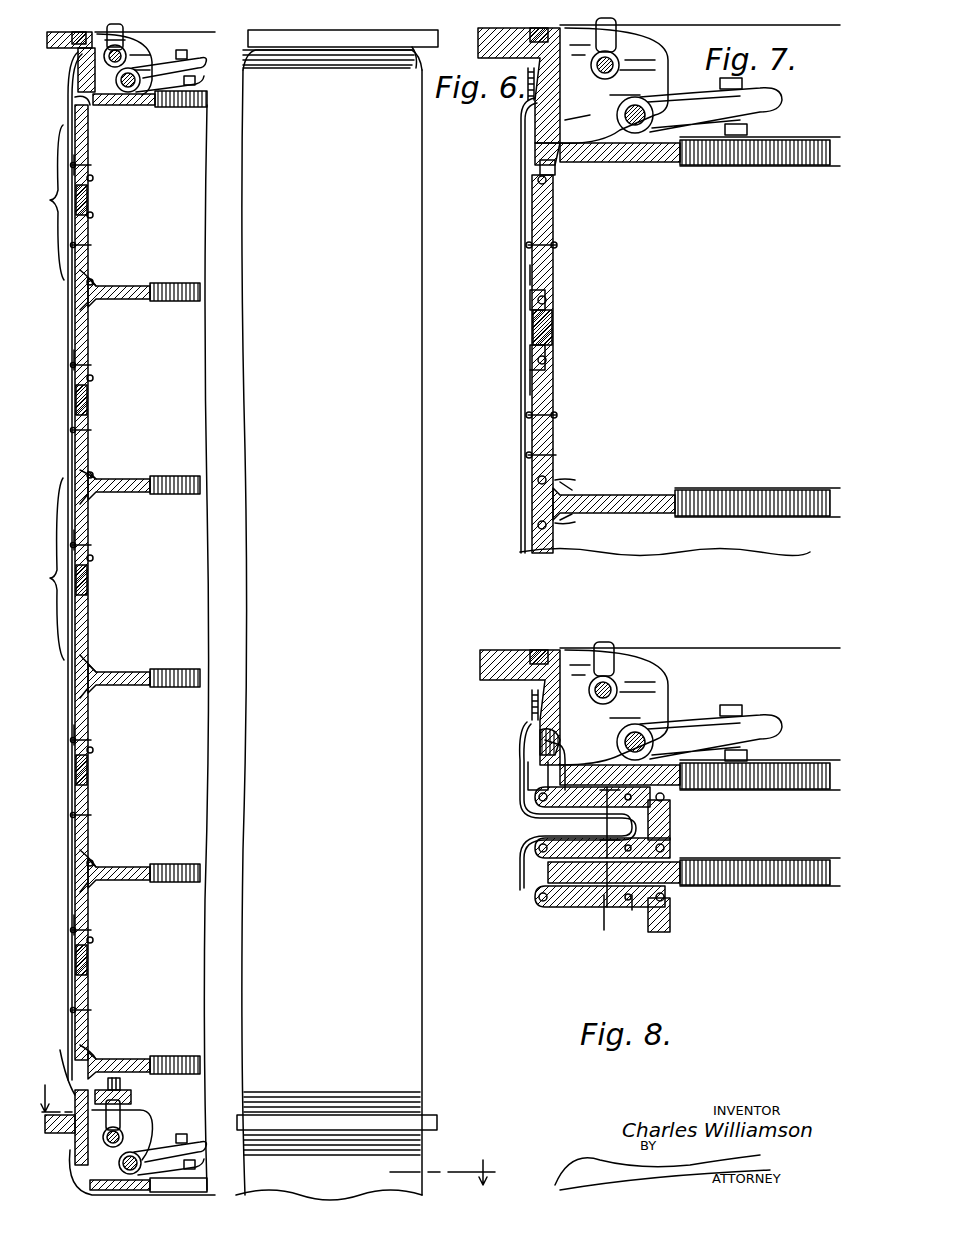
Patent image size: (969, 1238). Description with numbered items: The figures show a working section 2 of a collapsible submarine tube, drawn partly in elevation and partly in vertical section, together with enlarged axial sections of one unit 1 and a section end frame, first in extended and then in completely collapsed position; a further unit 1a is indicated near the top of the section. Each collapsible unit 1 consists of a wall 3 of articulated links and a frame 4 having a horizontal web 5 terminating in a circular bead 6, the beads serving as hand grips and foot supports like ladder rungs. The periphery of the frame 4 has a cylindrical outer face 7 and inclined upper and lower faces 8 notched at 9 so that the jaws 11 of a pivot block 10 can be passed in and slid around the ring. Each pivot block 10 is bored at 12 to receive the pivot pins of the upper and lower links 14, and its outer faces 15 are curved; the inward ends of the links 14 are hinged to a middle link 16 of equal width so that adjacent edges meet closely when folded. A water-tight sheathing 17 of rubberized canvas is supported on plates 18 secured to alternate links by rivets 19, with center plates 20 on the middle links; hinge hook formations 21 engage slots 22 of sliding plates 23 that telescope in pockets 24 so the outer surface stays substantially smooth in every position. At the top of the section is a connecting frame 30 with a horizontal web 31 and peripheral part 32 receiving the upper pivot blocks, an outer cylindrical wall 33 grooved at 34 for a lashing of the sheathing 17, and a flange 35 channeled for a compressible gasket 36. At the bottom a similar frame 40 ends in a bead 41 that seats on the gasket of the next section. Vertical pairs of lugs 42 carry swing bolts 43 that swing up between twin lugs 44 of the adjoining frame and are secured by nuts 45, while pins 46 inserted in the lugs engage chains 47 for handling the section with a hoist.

In FIG. 6, the collapsible unit 1 is at (52, 569).
In FIG. 6, the upper liner section 1a is at (50, 202).
In FIG. 6, the working section 2 is at (410, 603).
In FIG. 7, the working section 2 is at (521, 232).
In FIG. 8, the working section 2 is at (520, 748).
In FIG. 6, the wall 3 is at (99, 369).
In FIG. 6, the frame 4 is at (128, 285).
In FIG. 7, the frame 4 is at (638, 514).
In FIG. 8, the frame 4 is at (580, 785).
In FIG. 6, the horizontal web 5 is at (142, 478).
In FIG. 7, the horizontal web 5 is at (645, 492).
In FIG. 6, the circular head or bead 6 is at (178, 292).
In FIG. 7, the circular head or bead 6 is at (685, 165).
In FIG. 8, the circular head or bead 6 is at (750, 790).
In FIG. 6, the cylindrical outer face 7 is at (80, 867).
In FIG. 7, the cylindrical outer face 7 is at (560, 490).
In FIG. 8, the cylindrical outer face 7 is at (545, 870).
In FIG. 7, the inclined upper and lower faces 8 is at (570, 485).
In FIG. 6, the notch 9 is at (268, 1144).
In FIG. 6, the pivot block 10 is at (80, 100).
In FIG. 7, the pivot block 10 is at (540, 157).
In FIG. 8, the pivot block 10 is at (540, 800).
In FIG. 6, the jaws 11 is at (92, 286).
In FIG. 7, the jaws 11 is at (588, 538).
In FIG. 8, the jaws 11 is at (540, 745).
In FIG. 6, the bore 12 is at (78, 115).
In FIG. 7, the bore 12 is at (536, 180).
In FIG. 8, the bore 12 is at (540, 822).
In FIG. 6, the upper and lower links 14 is at (100, 346).
In FIG. 7, the upper and lower links 14 is at (553, 268).
In FIG. 8, the upper and lower links 14 is at (575, 745).
In FIG. 8, the outer faces of the blocks 15 is at (535, 778).
In FIG. 6, the middle link 16 is at (88, 200).
In FIG. 7, the middle link 16 is at (553, 333).
In FIG. 8, the middle link 16 is at (672, 820).
In FIG. 6, the water-tight sheathing 17 is at (68, 688).
In FIG. 7, the water-tight sheathing 17 is at (515, 440).
In FIG. 8, the water-tight sheathing 17 is at (520, 760).
In FIG. 6, the plates 18 is at (72, 330).
In FIG. 7, the plates 18 is at (532, 195).
In FIG. 8, the plates 18 is at (585, 910).
In FIG. 6, the rivets 19 is at (88, 243).
In FIG. 7, the rivets 19 is at (528, 246).
In FIG. 8, the rivets 19 is at (560, 910).
In FIG. 7, the center plates 20 is at (553, 325).
In FIG. 8, the center plates 20 is at (672, 830).
In FIG. 7, the hinge hook formations 21 is at (555, 315).
In FIG. 8, the hinge hook formations 21 is at (668, 803).
In FIG. 8, the slots 22 is at (640, 800).
In FIG. 6, the sliding plates 23 is at (90, 180).
In FIG. 7, the sliding plates 23 is at (536, 302).
In FIG. 8, the sliding plates 23 is at (630, 905).
In FIG. 6, the pockets 24 is at (74, 430).
In FIG. 7, the pockets 24 is at (530, 278).
In FIG. 8, the pockets 24 is at (650, 725).
In FIG. 6, the connecting or section frame 30 is at (186, 40).
In FIG. 7, the connecting or section frame 30 is at (620, 60).
In FIG. 8, the connecting or section frame 30 is at (762, 660).
In FIG. 6, the horizontal web 31 is at (130, 105).
In FIG. 7, the horizontal web 31 is at (620, 163).
In FIG. 8, the horizontal web 31 is at (620, 775).
In FIG. 6, the peripheral part 32 is at (95, 105).
In FIG. 6, the outer cylindrical wall 33 is at (108, 38).
In FIG. 7, the outer cylindrical wall 33 is at (550, 65).
In FIG. 8, the outer cylindrical wall 33 is at (560, 698).
In FIG. 6, the groove 34 is at (420, 1096).
In FIG. 7, the groove 34 is at (525, 100).
In FIG. 8, the groove 34 is at (530, 708).
In FIG. 6, the flange 35 is at (437, 1122).
In FIG. 7, the flange 35 is at (532, 60).
In FIG. 8, the flange 35 is at (502, 650).
In FIG. 6, the compressible gasket 36 is at (78, 32).
In FIG. 7, the compressible gasket 36 is at (535, 30).
In FIG. 8, the compressible gasket 36 is at (545, 650).
In FIG. 6, the section or connecting frame 40 is at (118, 1058).
In FIG. 6, the bead 41 is at (70, 1133).
In FIG. 6, the lugs 42 is at (131, 1135).
In FIG. 7, the lugs 42 is at (660, 78).
In FIG. 6, the swing bolts 43 is at (125, 1108).
In FIG. 7, the swing bolts 43 is at (620, 40).
In FIG. 8, the swing bolts 43 is at (612, 660).
In FIG. 6, the twin lugs 44 is at (56, 1068).
In FIG. 6, the nuts 45 is at (122, 1080).
In FIG. 6, the pins 46 is at (145, 1162).
In FIG. 7, the pins 46 is at (630, 135).
In FIG. 8, the pins 46 is at (650, 718).
In FIG. 6, the chains 47 is at (191, 1188).
In FIG. 7, the chains 47 is at (710, 160).